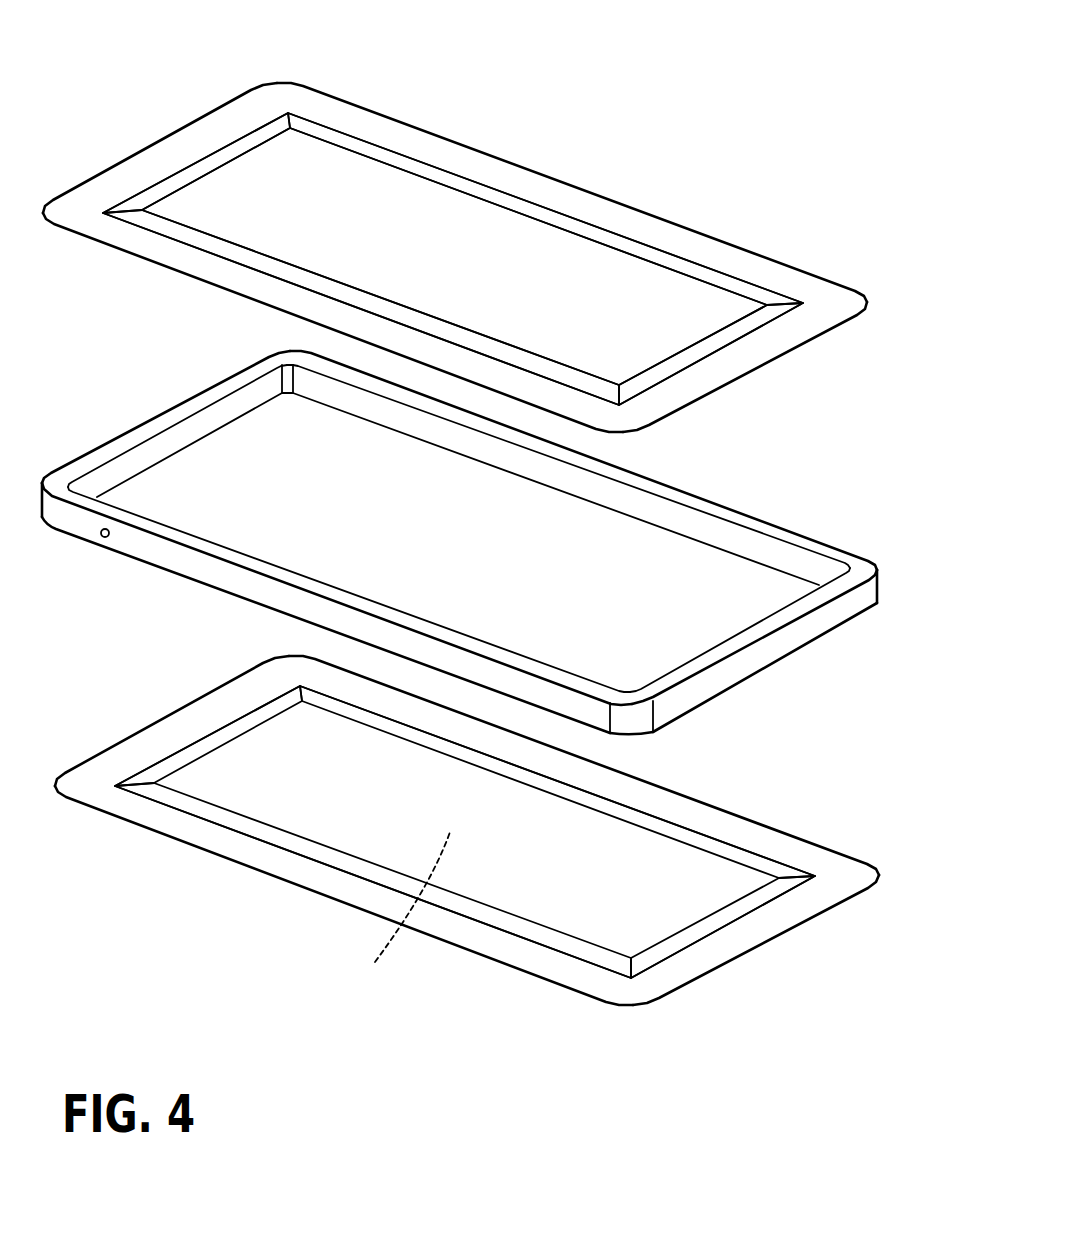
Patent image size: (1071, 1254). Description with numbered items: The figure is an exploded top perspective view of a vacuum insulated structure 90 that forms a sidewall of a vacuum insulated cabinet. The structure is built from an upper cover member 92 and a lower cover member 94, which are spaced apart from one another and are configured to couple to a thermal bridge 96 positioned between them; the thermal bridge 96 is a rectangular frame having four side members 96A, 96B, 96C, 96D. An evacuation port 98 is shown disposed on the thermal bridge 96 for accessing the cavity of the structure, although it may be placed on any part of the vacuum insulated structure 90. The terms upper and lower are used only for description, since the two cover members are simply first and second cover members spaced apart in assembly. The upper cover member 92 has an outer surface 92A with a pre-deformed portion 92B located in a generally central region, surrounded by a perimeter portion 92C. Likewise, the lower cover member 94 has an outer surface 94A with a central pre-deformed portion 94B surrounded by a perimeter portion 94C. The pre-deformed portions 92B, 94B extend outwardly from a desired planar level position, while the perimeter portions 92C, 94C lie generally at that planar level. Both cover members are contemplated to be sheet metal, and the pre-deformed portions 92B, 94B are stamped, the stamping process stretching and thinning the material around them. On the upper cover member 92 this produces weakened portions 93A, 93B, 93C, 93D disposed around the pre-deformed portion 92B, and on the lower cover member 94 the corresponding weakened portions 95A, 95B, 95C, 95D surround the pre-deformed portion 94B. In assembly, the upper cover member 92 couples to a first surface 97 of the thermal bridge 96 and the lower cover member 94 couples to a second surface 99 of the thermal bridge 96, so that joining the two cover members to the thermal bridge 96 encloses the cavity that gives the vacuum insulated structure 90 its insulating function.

The vacuum insulated structure 90 is at (560, 118).
The upper cover member 92 is at (778, 235).
The outer surface 92A is at (683, 247).
The pre-deformed portion 92B is at (545, 293).
The perimeter portion 92C is at (430, 150).
The weakened portion 93A is at (748, 288).
The weakened portion 93B is at (716, 343).
The weakened portion 93C is at (202, 240).
The weakened portion 93D is at (197, 173).
The lower cover member 94 is at (617, 1042).
The outer surface 94A is at (695, 985).
The pre-deformed portion 94B is at (405, 919).
The perimeter portion 94C is at (122, 812).
The weakened portion 95A is at (732, 853).
The weakened portion 95B is at (747, 903).
The weakened portion 95C is at (313, 848).
The weakened portion 95D is at (188, 755).
The thermal bridge 96 is at (785, 512).
The side member 96A is at (690, 490).
The side member 96B is at (765, 647).
The side member 96C is at (230, 573).
The side member 96D is at (158, 412).
The first surface 97 is at (855, 568).
The evacuation port 98 is at (102, 537).
The second surface 99 is at (697, 707).